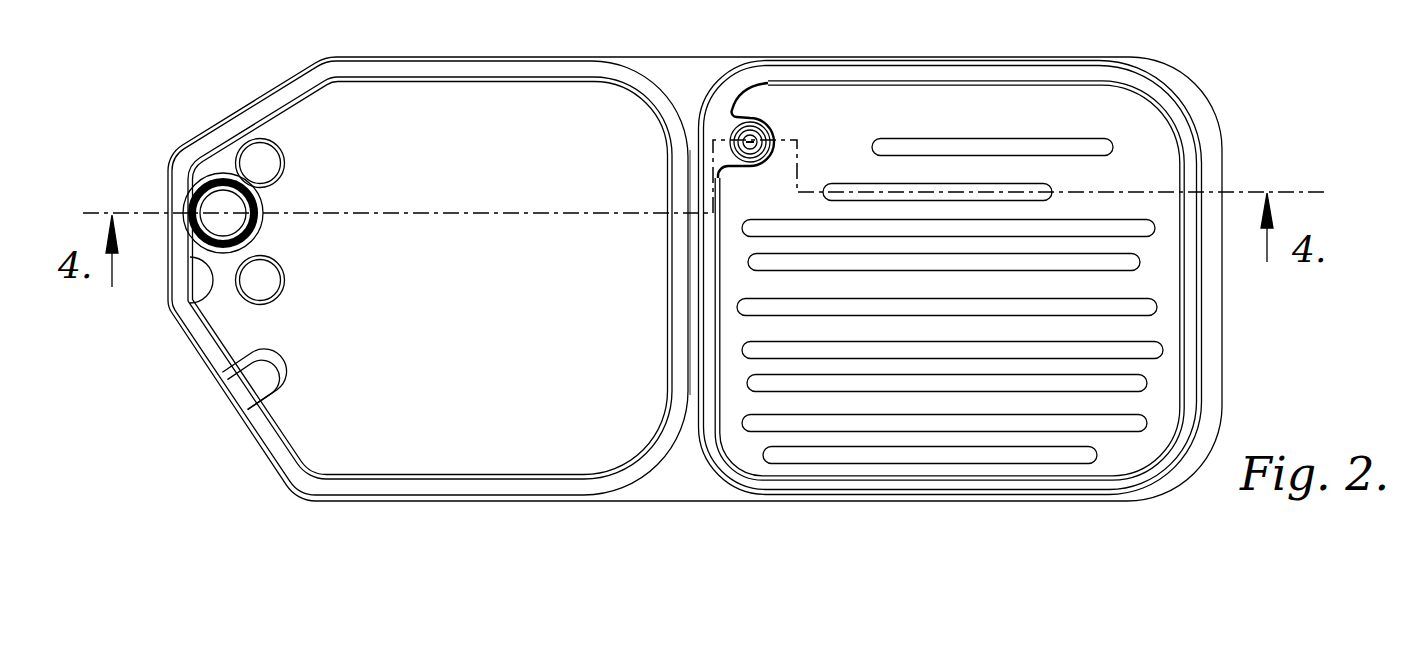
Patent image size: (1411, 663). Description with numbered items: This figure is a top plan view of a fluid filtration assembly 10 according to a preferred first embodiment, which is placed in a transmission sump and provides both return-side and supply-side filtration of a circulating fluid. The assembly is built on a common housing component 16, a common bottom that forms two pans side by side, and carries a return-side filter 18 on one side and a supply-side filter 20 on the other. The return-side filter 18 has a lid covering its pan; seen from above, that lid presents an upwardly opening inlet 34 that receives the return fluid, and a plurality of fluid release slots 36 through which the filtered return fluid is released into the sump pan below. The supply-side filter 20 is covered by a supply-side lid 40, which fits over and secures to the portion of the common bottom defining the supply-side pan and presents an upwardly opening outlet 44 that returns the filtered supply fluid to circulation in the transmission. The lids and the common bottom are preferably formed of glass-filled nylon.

The fluid filtration assembly 10 is at (1063, 44).
The common housing component 16 is at (703, 60).
The return-side filter 18 is at (1208, 92).
The supply-side filter 20 is at (250, 81).
The inlet 34 is at (755, 138).
The fluid release slots 36 is at (1151, 307).
The supply-side lid 40 is at (562, 467).
The outlet 44 is at (207, 207).